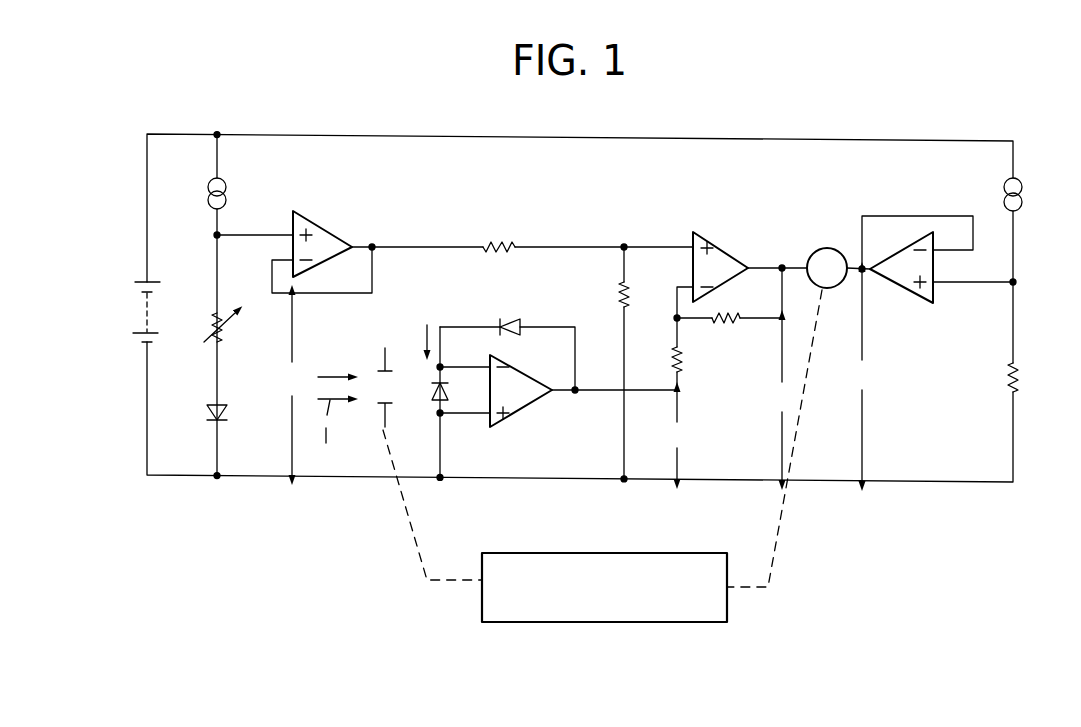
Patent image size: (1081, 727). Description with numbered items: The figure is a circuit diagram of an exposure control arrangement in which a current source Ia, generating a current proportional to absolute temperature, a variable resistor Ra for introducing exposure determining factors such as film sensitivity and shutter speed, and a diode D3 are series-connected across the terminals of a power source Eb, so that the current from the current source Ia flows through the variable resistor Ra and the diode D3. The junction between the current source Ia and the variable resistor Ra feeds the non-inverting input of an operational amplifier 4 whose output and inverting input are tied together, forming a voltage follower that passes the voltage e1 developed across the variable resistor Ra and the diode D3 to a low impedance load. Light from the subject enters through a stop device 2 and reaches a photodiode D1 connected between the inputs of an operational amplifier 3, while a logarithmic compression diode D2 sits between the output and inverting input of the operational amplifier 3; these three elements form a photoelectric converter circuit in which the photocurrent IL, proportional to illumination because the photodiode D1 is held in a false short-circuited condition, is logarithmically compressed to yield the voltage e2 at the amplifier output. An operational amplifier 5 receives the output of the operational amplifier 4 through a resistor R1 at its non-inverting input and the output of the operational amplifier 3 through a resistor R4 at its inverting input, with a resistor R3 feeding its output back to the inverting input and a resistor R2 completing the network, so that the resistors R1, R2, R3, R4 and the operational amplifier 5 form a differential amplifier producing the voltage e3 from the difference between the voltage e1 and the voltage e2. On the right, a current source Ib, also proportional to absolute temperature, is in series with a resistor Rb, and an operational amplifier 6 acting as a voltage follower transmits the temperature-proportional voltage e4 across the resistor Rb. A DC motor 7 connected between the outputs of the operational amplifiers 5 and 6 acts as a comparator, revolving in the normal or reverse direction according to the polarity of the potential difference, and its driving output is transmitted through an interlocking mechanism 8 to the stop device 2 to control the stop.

The stop device 2 is at (380, 406).
The operational amplifier 3 is at (520, 415).
The operational amplifier 4 is at (337, 236).
The operational amplifier 5 is at (725, 252).
The operational amplifier 6 is at (891, 283).
The DC motor 7 is at (827, 248).
The interlocking mechanism 8 is at (605, 622).
The current source Ia is at (227, 191).
The current source Ib is at (1004, 191).
The power source Eb is at (133, 336).
The variable resistor Ra is at (227, 329).
The resistor Rb is at (1018, 376).
The resistor R1 is at (498, 243).
The resistor R2 is at (621, 292).
The resistor R3 is at (726, 323).
The resistor R4 is at (672, 360).
The photodiode D1 is at (432, 398).
The logarithmic compression diode D2 is at (517, 318).
The diode D3 is at (223, 404).
The photocurrent IL is at (425, 332).
The voltage e1 is at (291, 385).
The voltage e2 is at (675, 435).
The voltage e3 is at (779, 400).
The voltage e4 is at (859, 376).